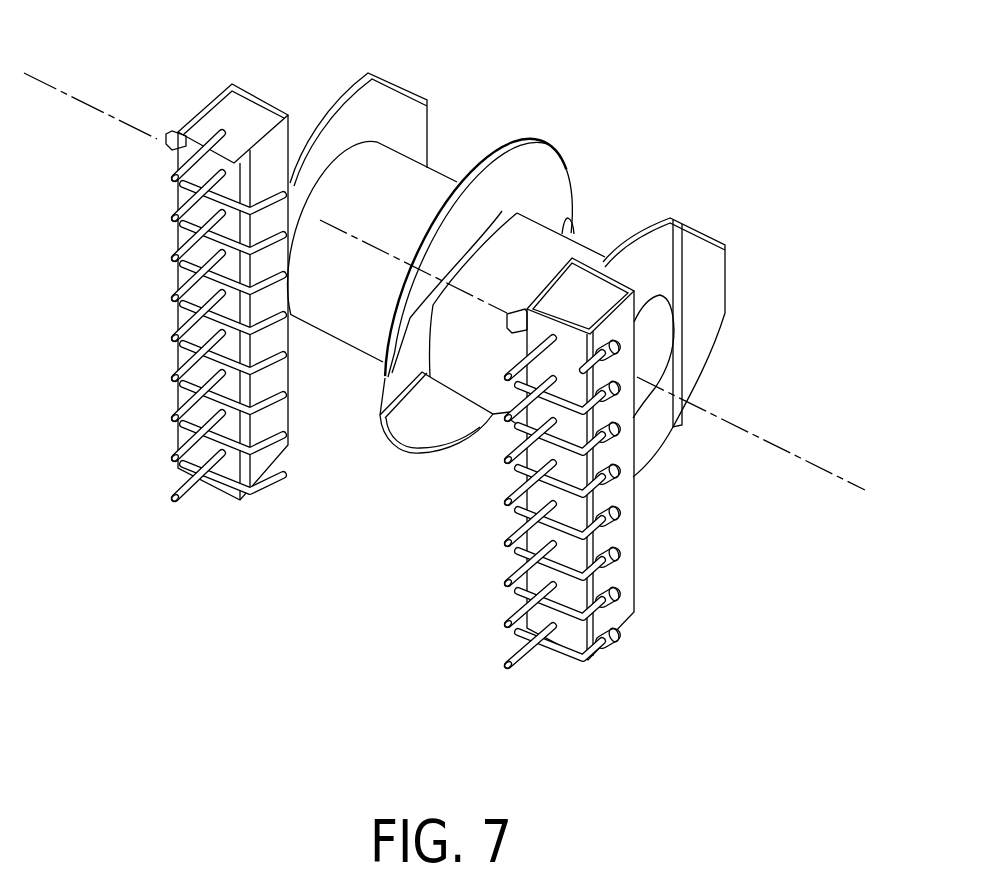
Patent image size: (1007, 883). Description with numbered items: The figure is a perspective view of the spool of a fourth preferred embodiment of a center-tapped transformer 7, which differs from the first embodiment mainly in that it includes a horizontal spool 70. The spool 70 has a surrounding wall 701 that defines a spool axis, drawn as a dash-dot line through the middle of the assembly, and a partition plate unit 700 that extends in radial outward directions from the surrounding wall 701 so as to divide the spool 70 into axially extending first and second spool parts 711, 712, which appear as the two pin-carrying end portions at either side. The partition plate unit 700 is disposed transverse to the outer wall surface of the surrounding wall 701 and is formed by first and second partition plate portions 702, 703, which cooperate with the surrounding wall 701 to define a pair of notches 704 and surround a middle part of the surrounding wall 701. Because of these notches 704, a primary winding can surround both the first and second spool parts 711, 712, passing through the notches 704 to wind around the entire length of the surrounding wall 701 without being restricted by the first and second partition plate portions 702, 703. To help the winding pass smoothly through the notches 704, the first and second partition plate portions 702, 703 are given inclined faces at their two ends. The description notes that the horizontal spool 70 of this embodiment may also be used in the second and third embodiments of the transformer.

The center-tapped transformer 7 is at (462, 343).
The horizontal spool 70 is at (710, 297).
The partition plate unit 700 is at (492, 278).
The surrounding wall 701 is at (441, 170).
The first partition plate portion 702 is at (552, 138).
The second partition plate portion 703 is at (432, 448).
The notch 704 is at (568, 216).
The first spool part 711 is at (362, 341).
The second spool part 712 is at (487, 420).